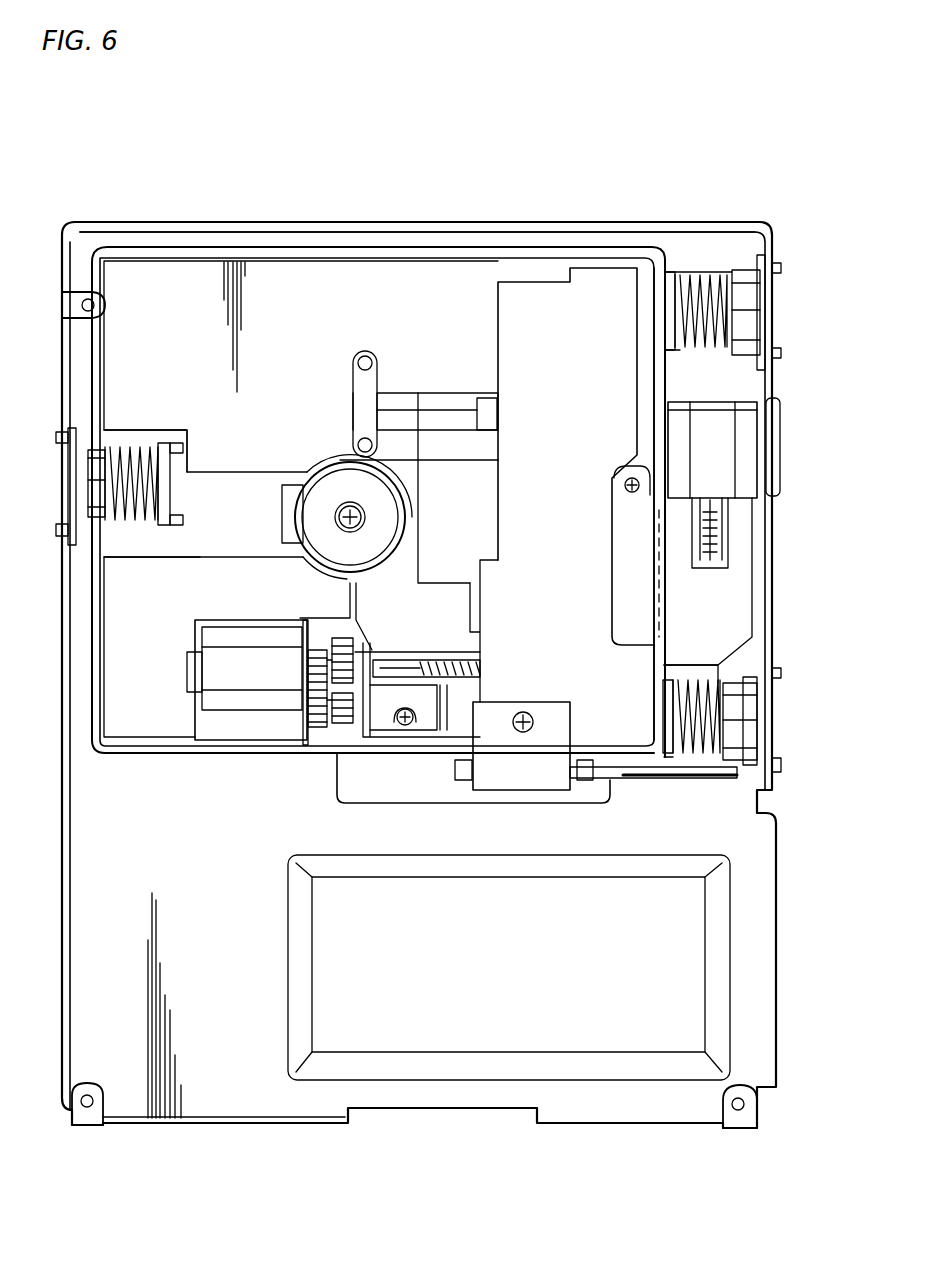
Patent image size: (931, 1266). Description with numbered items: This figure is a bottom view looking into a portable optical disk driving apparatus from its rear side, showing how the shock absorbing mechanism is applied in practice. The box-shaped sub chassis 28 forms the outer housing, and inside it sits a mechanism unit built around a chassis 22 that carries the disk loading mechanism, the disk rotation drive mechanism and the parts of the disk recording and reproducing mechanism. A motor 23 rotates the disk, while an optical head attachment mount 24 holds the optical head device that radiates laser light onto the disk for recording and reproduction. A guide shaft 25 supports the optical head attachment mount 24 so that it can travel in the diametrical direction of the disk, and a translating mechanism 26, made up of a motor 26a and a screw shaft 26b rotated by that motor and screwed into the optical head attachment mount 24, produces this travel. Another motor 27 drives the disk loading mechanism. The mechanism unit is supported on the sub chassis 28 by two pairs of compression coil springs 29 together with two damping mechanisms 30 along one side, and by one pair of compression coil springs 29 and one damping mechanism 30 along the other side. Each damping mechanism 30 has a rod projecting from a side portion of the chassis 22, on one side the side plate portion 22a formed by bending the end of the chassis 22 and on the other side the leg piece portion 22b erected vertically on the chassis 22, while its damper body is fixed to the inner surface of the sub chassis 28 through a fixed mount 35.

The chassis 22 is at (430, 292).
The side plate portion 22a is at (658, 360).
The leg piece portion 22b is at (165, 500).
The motor 23 is at (331, 487).
The optical head attachment mount 24 is at (585, 578).
The guide shaft 25 is at (440, 402).
The translating mechanism 26 is at (322, 762).
The motor 26a is at (257, 673).
The screw shaft 26b is at (463, 673).
The motor 27 is at (715, 458).
The sub chassis 28 is at (240, 222).
The compression coil spring 29 is at (707, 348).
The damping mechanism 30 is at (726, 270).
The fixed mount 35 is at (750, 312).